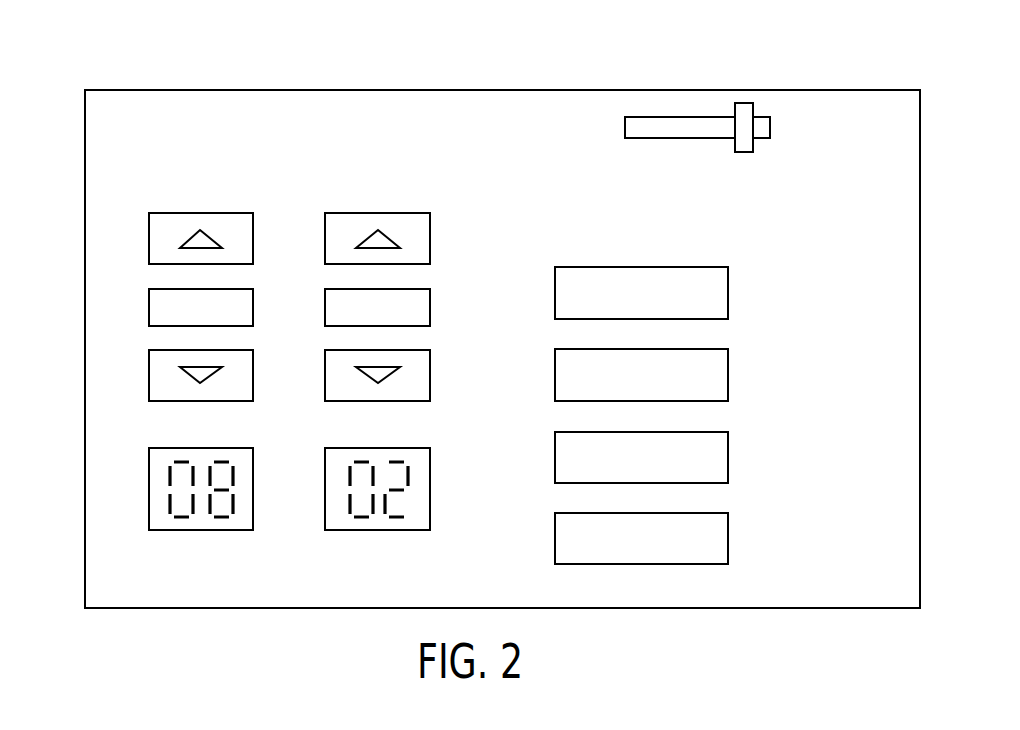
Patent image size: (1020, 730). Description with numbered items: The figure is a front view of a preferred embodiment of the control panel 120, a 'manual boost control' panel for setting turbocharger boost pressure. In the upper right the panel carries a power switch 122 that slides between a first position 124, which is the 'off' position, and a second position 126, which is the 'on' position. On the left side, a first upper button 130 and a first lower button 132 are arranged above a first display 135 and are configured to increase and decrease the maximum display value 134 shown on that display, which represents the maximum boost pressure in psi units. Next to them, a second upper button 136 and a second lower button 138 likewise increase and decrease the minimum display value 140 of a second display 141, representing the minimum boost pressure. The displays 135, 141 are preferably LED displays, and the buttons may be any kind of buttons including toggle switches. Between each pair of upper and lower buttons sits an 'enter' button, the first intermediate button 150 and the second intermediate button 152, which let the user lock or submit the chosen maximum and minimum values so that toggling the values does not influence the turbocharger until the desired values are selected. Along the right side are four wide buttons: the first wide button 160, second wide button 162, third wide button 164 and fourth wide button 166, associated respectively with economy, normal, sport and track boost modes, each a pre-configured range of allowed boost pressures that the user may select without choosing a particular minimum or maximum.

The control panel 120 is at (407, 90).
The power switch 122 is at (753, 143).
The first position 124 is at (643, 187).
The second position 126 is at (752, 187).
The first upper button 130 is at (177, 213).
The first lower button 132 is at (149, 375).
The maximum display value 134 is at (222, 520).
The first display 135 is at (160, 532).
The second upper button 136 is at (430, 239).
The second lower button 138 is at (430, 373).
The minimum display value 140 is at (410, 475).
The second display 141 is at (430, 517).
The first intermediate button 150 is at (149, 307).
The second intermediate button 152 is at (430, 307).
The first wide button 160 is at (728, 293).
The second wide button 162 is at (728, 375).
The third wide button 164 is at (728, 453).
The fourth wide button 166 is at (728, 538).